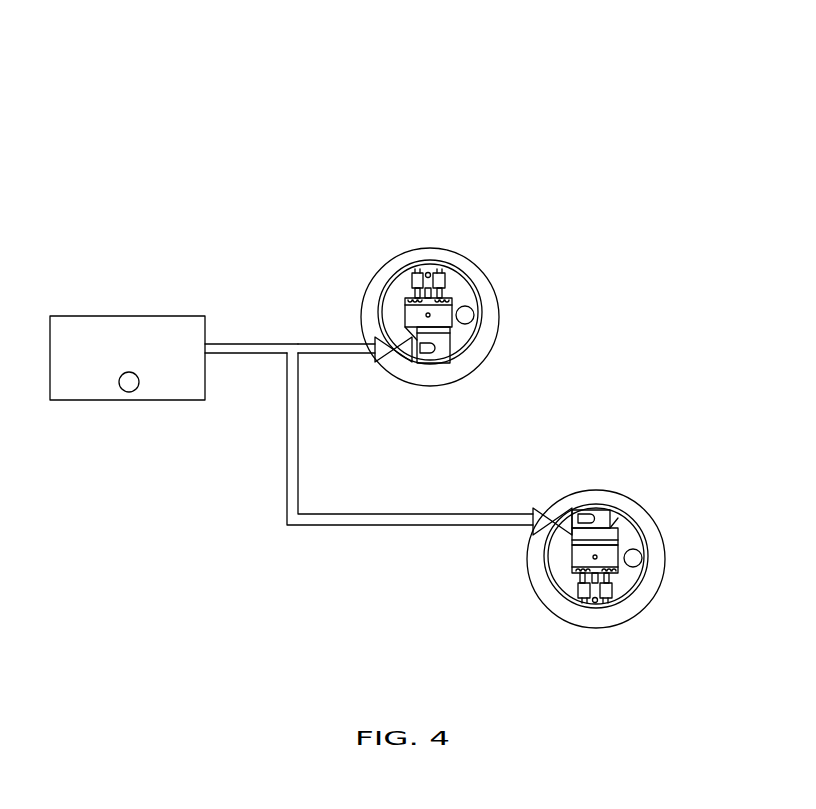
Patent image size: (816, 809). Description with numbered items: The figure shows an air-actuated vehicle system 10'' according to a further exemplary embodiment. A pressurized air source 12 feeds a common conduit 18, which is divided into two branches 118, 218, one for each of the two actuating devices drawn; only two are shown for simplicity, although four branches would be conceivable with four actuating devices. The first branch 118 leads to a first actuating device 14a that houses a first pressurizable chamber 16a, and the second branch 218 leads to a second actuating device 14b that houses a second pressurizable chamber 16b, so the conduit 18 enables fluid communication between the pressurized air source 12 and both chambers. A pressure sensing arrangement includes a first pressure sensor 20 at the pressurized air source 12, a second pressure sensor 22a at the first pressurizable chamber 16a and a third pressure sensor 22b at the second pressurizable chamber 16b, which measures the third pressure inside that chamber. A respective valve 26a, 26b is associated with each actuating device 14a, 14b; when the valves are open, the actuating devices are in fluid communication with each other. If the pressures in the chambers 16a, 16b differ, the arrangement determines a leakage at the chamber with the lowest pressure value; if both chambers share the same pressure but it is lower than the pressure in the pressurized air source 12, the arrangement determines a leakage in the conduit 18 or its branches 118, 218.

The air-actuated vehicle system 10'' is at (397, 370).
The pressurized air source 12 is at (128, 316).
The first pressure sensor 20 is at (121, 389).
The common conduit 18 is at (240, 344).
The first branch 118 is at (343, 344).
The second branch 218 is at (435, 525).
The first actuating device 14a is at (430, 248).
The first pressurizable chamber 16a is at (440, 272).
The second pressure sensor 22a is at (475, 314).
The valve 26a is at (383, 362).
The second actuating device 14b is at (577, 612).
The second pressurizable chamber 16b is at (609, 508).
The third pressure sensor 22b is at (642, 558).
The valve 26b is at (535, 506).